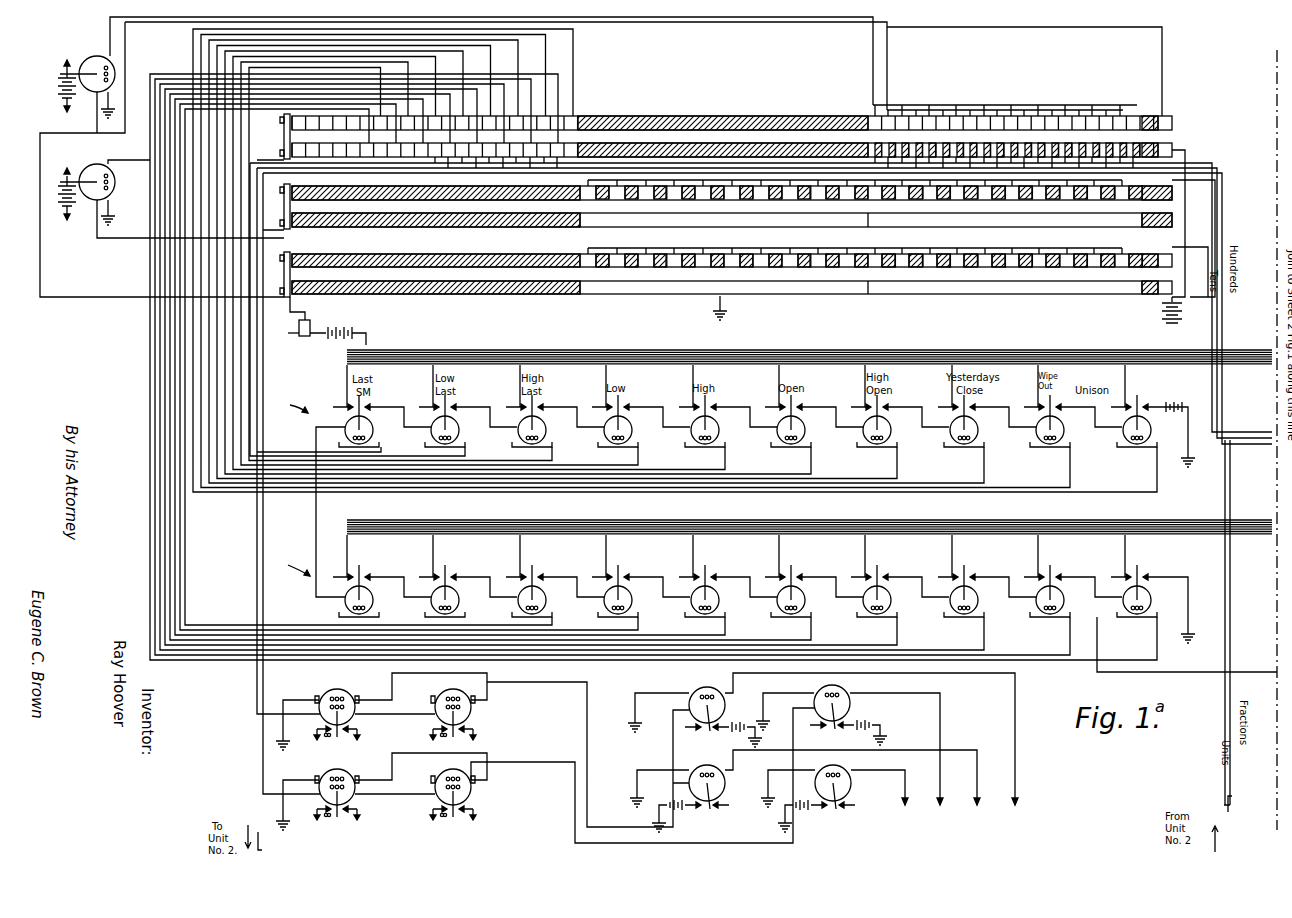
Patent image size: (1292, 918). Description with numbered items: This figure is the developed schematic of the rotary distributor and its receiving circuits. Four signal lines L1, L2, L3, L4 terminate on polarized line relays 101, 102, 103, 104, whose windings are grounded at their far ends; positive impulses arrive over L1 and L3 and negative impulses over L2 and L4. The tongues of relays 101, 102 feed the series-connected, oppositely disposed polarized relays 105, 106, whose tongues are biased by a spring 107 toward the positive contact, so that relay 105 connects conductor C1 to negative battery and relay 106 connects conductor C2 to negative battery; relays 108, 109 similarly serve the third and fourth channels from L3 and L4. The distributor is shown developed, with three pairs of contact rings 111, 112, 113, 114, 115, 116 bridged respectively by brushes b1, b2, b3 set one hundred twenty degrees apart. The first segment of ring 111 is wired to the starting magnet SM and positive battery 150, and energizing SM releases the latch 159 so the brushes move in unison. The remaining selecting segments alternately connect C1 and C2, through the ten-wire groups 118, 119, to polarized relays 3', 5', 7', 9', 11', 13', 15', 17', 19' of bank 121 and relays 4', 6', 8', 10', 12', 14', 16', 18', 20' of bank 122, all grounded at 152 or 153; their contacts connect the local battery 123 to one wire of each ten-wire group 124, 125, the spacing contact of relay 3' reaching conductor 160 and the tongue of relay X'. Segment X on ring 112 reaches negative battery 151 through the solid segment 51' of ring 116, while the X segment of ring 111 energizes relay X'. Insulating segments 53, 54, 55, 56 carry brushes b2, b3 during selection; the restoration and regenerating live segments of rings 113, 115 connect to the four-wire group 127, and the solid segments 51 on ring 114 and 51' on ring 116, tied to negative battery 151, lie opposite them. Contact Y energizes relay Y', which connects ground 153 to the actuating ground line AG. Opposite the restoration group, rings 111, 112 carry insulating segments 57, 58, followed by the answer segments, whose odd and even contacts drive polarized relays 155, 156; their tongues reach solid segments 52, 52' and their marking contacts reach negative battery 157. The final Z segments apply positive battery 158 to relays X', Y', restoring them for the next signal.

The solid segment 51 is at (705, 220).
The solid segment 52 is at (1005, 220).
The solid contact segment 51' is at (693, 288).
The solid segment 52' is at (1003, 288).
The insulating segment 53 is at (400, 186).
The insulating segment 54 is at (410, 213).
The insulating segment 55 is at (410, 254).
The insulating segment 56 is at (410, 281).
The insulating segment 57 is at (665, 116).
The insulating segment 58 is at (690, 143).
The polarized line relay 101 is at (700, 684).
The polarized line relay 102 is at (716, 762).
The polarized line relay 103 is at (850, 708).
The polarized line relay 104 is at (851, 788).
The polarized relay 105 is at (466, 718).
The polarized relay 106 is at (350, 720).
The spring 107 is at (330, 818).
The relay 108 is at (466, 798).
The relay 109 is at (350, 800).
The contact ring 111 is at (280, 122).
The contact ring 112 is at (280, 152).
The contact ring 113 is at (280, 190).
The contact ring 114 is at (280, 220).
The contact ring 115 is at (280, 258).
The contact ring 116 is at (280, 288).
The group of ten wires 118 is at (248, 378).
The group of ten wires 119 is at (148, 392).
The bank of polarized relays 121 is at (293, 402).
The bank of polarized relays 122 is at (293, 564).
The local battery 123 is at (1160, 400).
The group of ten wires 124 is at (998, 350).
The group of ten wires 125 is at (985, 520).
The group of four wires 127 is at (1211, 392).
The battery 150 is at (338, 339).
The battery 151 is at (730, 312).
The ground 152 is at (1182, 470).
The ground 153 is at (1190, 640).
The polarized relay 155 is at (115, 182).
The polarized relay 156 is at (95, 56).
The battery 157 is at (56, 100).
The battery 158 is at (1159, 320).
The latch 159 is at (308, 316).
The conductor 160 is at (589, 490).
The polarized relay 3' is at (360, 406).
The polarized relay 4' is at (360, 576).
The polarized relay 5' is at (446, 406).
The polarized relay 6' is at (446, 576).
The polarized relay 7' is at (533, 406).
The polarized relay 8' is at (533, 576).
The polarized relay 9' is at (619, 406).
The polarized relay 10' is at (623, 576).
The polarized relay 11' is at (710, 406).
The polarized relay 12' is at (710, 576).
The polarized relay 13' is at (796, 406).
The polarized relay 14' is at (796, 576).
The polarized relay 15' is at (882, 406).
The polarized relay 16' is at (882, 576).
The polarized relay 17' is at (969, 406).
The polarized relay 18' is at (969, 576).
The polarized relay 19' is at (1055, 406).
The polarized relay 20' is at (1055, 576).
The polarized relay X' is at (1139, 406).
The polarized relay Y' is at (1138, 576).
The brush b1 is at (291, 136).
The brush b2 is at (291, 206).
The brush b3 is at (291, 274).
The conductor C1 is at (263, 580).
The conductor C2 is at (257, 590).
The line L1 is at (1022, 808).
The line L2 is at (984, 808).
The line L3 is at (947, 808).
The line L4 is at (912, 808).
The actuating ground line AG is at (1187, 644).
The starting magnet SM is at (296, 334).